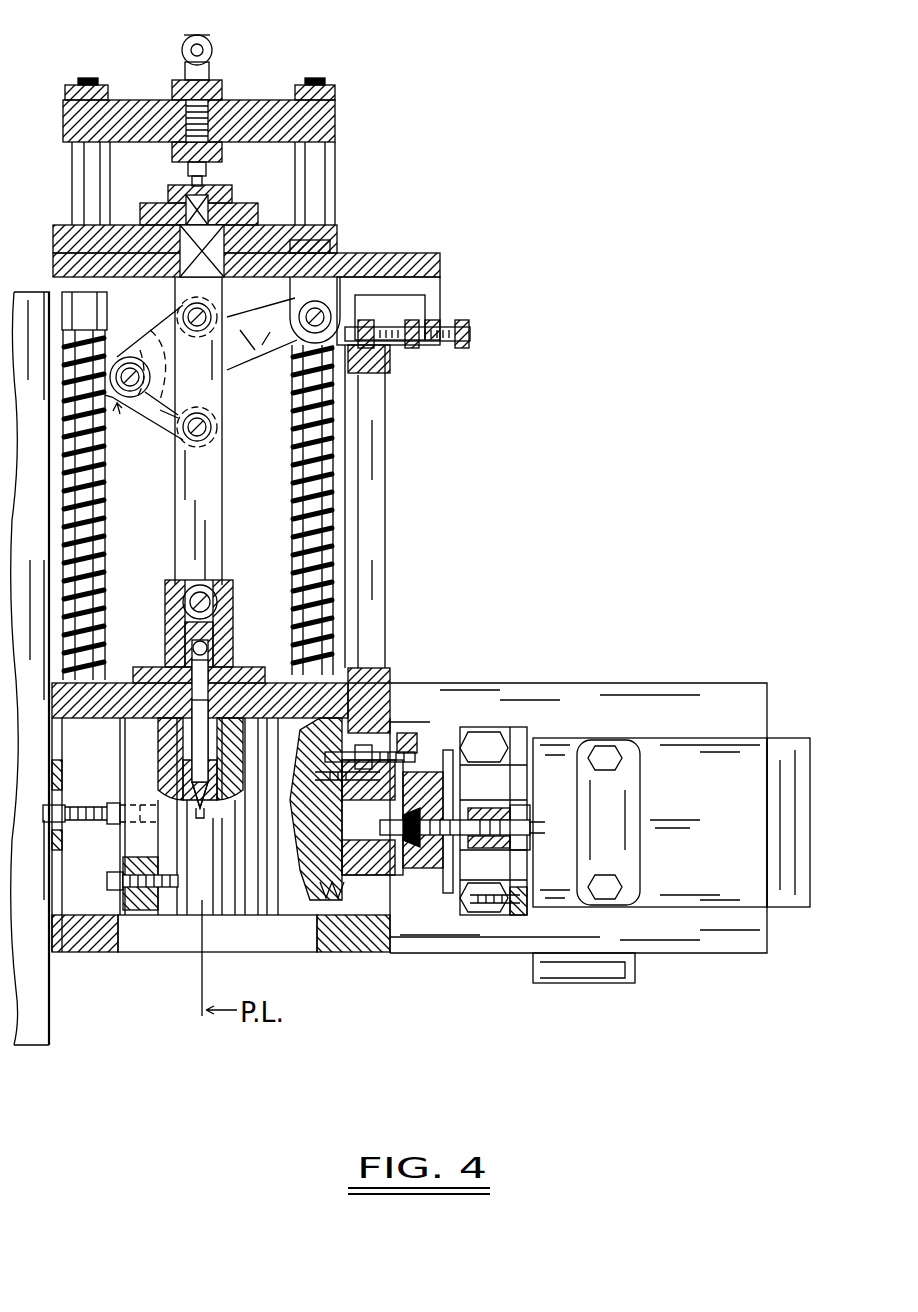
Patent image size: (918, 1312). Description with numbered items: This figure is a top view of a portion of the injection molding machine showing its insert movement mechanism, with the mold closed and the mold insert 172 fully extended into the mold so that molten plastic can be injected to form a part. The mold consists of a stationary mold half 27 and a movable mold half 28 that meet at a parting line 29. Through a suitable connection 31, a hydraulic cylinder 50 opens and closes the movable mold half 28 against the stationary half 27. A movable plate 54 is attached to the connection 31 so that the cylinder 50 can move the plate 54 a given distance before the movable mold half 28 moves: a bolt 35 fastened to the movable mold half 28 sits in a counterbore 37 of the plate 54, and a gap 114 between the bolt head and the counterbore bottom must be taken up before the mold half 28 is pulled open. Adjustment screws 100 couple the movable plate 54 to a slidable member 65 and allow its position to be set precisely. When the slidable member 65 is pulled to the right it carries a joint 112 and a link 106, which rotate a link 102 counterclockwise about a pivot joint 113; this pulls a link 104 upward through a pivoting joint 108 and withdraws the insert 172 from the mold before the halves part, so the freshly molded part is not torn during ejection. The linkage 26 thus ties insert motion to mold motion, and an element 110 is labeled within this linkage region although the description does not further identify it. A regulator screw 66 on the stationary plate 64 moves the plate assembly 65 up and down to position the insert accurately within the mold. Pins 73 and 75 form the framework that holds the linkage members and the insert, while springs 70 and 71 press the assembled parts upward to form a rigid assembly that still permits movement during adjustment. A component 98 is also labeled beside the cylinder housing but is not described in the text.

The linkage 26 is at (126, 423).
The stationary mold half 27 is at (195, 905).
The movable mold half 28 is at (215, 905).
The parting line 29 is at (197, 980).
The connection 31 is at (425, 910).
The bolt 35 is at (435, 725).
The counterbore 37 is at (398, 733).
The hydraulic cylinder 50 is at (800, 843).
The movable plate 54 is at (388, 552).
The stationary plate 64 is at (336, 120).
The slidable member 65 is at (440, 266).
The regulator screw 66 is at (180, 64).
The spring 70 is at (98, 562).
The spring 71 is at (330, 478).
The pin 73 is at (98, 538).
The pin 75 is at (335, 438).
The gear housing 98 is at (720, 713).
The adjustment screws 100 is at (472, 332).
The link 102 is at (160, 440).
The link 104 is at (222, 552).
The link 106 is at (283, 347).
The pivoting joint 108 is at (218, 440).
The bell crank lever 110 is at (153, 403).
The joint 112 is at (333, 275).
The pivot joint 113 is at (182, 311).
The gap 114 is at (410, 752).
The mold insert 172 is at (178, 752).